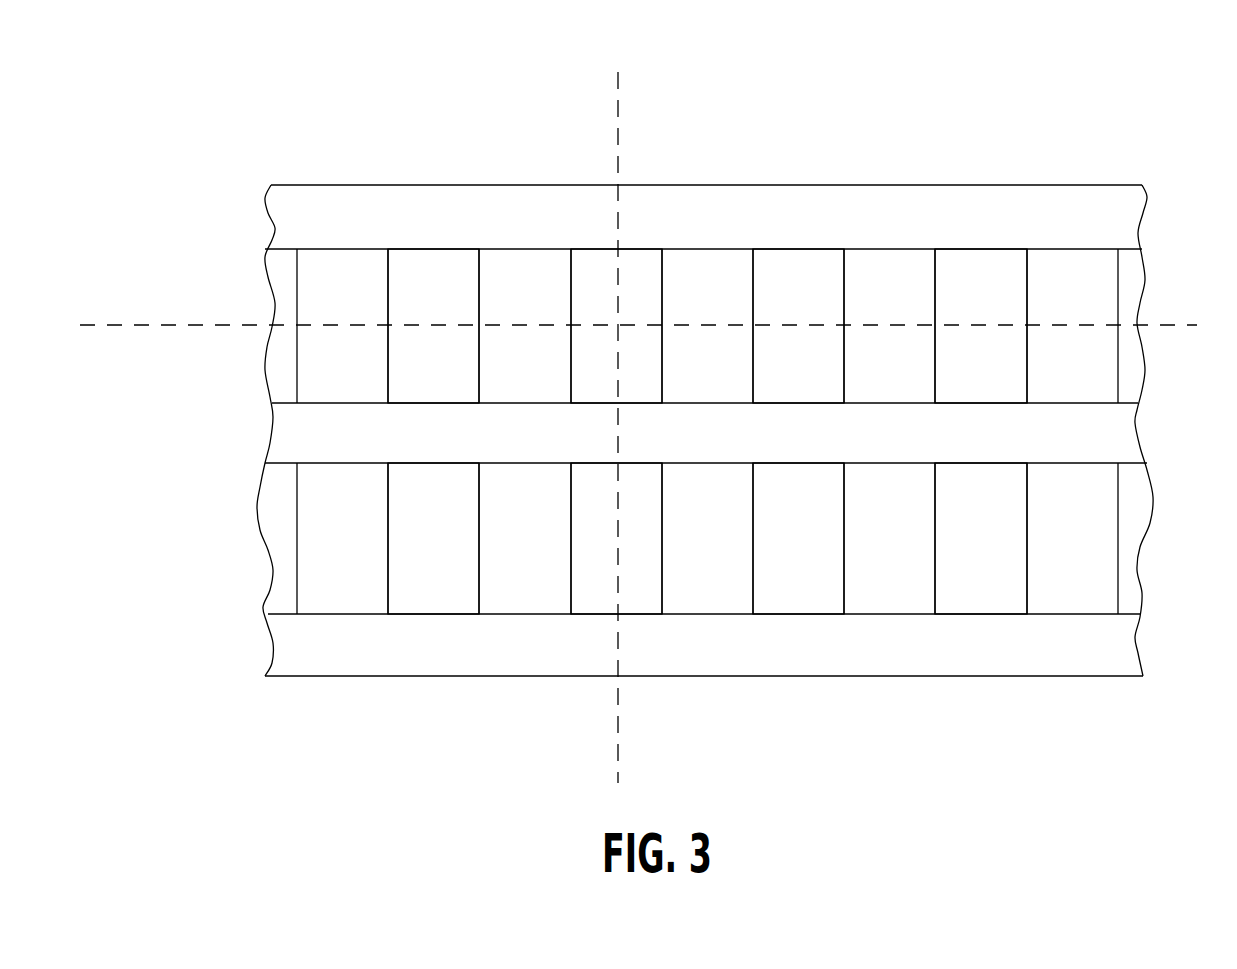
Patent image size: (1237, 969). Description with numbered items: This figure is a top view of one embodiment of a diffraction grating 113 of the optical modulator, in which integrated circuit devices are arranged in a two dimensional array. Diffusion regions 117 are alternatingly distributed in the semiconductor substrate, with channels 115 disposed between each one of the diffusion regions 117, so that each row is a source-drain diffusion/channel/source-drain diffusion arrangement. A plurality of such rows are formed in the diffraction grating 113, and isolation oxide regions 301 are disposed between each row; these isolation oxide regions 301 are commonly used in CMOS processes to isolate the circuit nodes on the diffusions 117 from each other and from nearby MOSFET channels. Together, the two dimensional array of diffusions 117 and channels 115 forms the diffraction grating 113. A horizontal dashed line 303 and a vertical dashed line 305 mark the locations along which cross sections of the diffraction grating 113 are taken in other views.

The diffraction grating 113 is at (1195, 44).
The channel 115 is at (418, 389).
The diffusion region 117 is at (326, 389).
The isolation oxide region 301 is at (1127, 204).
The dashed line 303 is at (165, 320).
The dashed line 305 is at (622, 141).